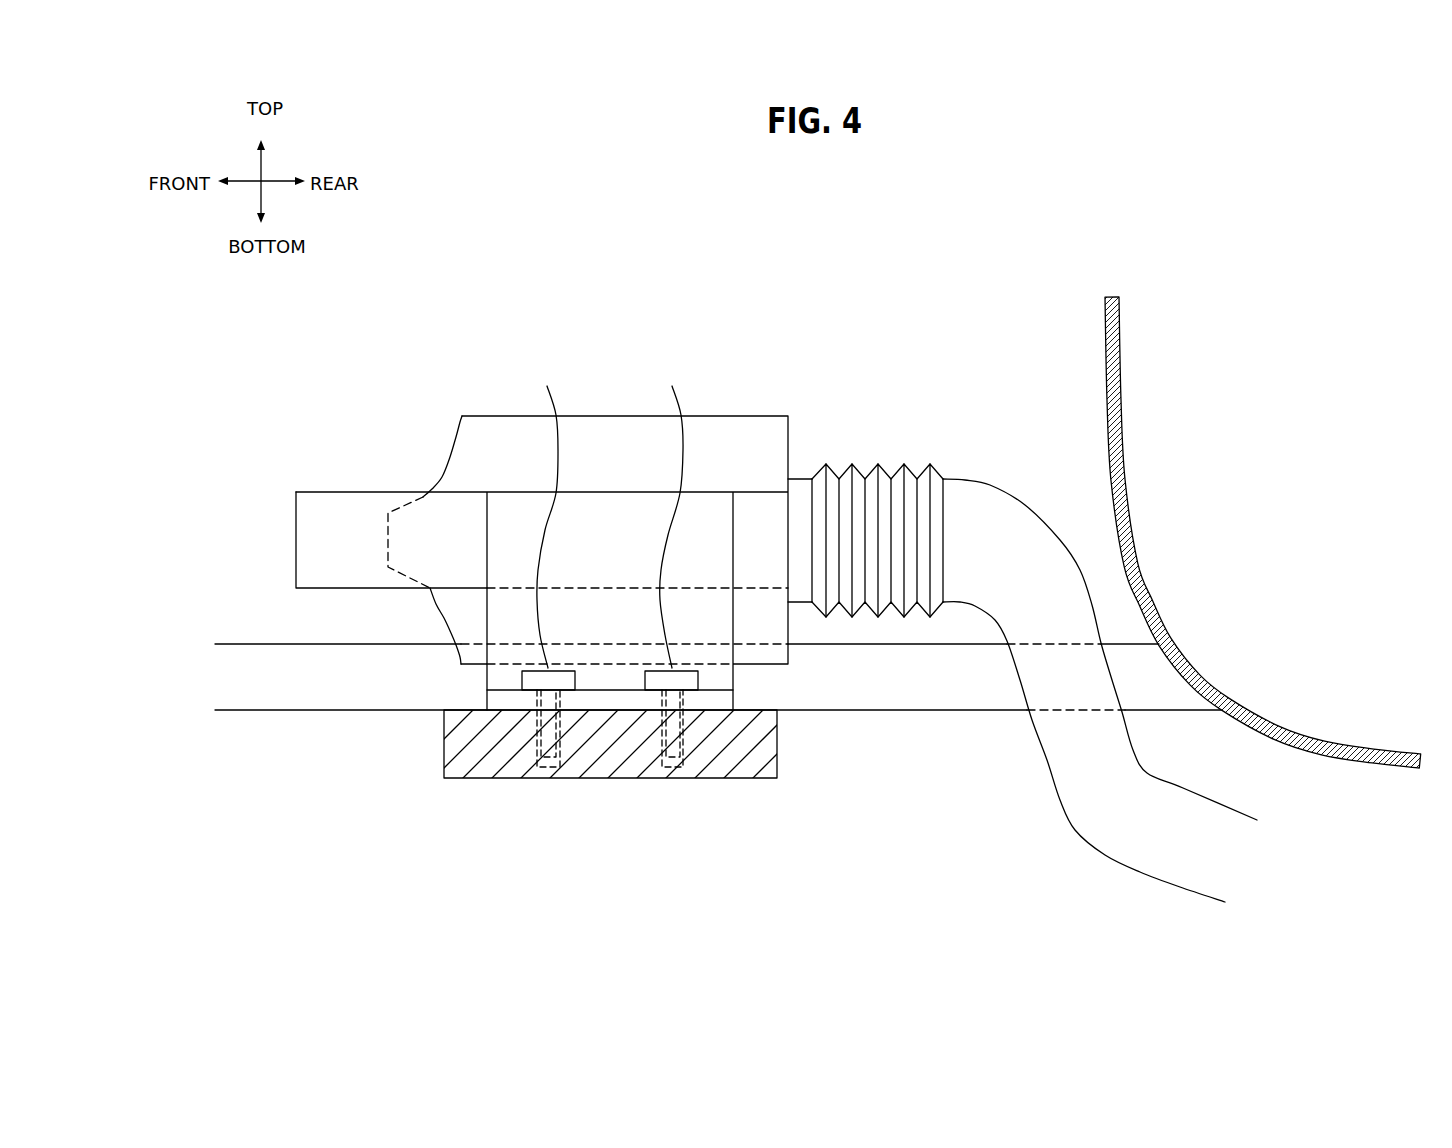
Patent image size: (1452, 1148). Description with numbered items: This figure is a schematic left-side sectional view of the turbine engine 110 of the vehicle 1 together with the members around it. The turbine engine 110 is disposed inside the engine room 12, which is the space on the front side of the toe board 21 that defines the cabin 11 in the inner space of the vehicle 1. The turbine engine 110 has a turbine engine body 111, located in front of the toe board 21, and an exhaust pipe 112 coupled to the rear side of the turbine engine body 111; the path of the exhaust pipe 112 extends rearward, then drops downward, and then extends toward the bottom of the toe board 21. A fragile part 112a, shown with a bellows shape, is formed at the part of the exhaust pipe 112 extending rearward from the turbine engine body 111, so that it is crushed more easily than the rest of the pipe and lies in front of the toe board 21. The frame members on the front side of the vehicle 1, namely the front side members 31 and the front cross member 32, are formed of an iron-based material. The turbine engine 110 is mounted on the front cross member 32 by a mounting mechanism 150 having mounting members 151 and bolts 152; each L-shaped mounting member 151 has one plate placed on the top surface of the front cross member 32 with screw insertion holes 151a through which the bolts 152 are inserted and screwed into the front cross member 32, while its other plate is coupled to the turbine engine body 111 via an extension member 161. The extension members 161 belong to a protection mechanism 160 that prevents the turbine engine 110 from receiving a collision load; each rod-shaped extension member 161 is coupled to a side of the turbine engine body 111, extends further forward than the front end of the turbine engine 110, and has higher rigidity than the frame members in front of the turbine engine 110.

The vehicle 1 is at (415, 237).
The cabin 11 is at (1247, 318).
The engine room 12 is at (617, 312).
The toe board 21 is at (1124, 365).
The front side member 31 is at (306, 712).
The front cross member 32 is at (453, 779).
The turbine engine 110 is at (542, 510).
The turbine engine body 111 is at (450, 436).
The exhaust pipe 112 is at (1022, 658).
The fragile part 112a is at (866, 468).
The mounting mechanism 150 is at (620, 757).
The mounting member 151 is at (745, 678).
The screw insertion hole 151a is at (560, 700).
The bolt 152 is at (610, 513).
The protection mechanism 160 is at (379, 470).
The extension member 161 is at (321, 490).